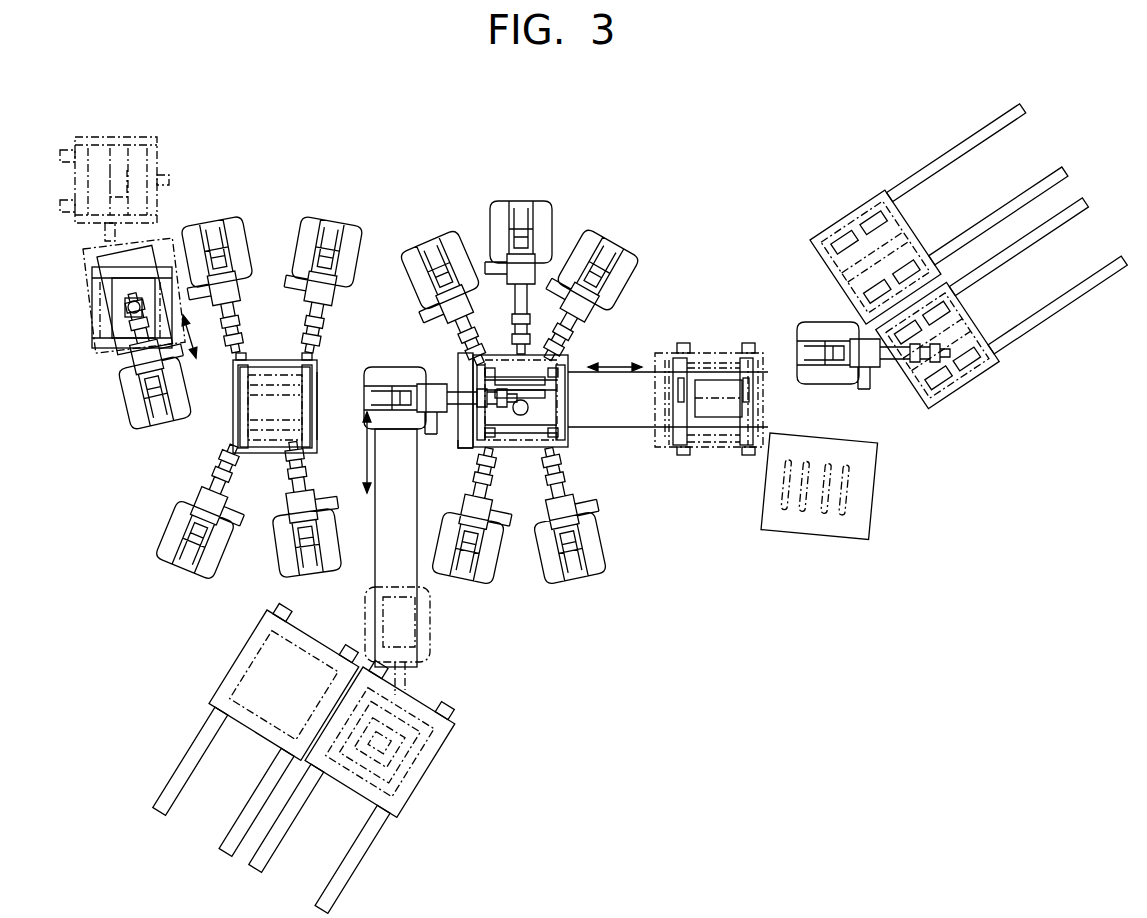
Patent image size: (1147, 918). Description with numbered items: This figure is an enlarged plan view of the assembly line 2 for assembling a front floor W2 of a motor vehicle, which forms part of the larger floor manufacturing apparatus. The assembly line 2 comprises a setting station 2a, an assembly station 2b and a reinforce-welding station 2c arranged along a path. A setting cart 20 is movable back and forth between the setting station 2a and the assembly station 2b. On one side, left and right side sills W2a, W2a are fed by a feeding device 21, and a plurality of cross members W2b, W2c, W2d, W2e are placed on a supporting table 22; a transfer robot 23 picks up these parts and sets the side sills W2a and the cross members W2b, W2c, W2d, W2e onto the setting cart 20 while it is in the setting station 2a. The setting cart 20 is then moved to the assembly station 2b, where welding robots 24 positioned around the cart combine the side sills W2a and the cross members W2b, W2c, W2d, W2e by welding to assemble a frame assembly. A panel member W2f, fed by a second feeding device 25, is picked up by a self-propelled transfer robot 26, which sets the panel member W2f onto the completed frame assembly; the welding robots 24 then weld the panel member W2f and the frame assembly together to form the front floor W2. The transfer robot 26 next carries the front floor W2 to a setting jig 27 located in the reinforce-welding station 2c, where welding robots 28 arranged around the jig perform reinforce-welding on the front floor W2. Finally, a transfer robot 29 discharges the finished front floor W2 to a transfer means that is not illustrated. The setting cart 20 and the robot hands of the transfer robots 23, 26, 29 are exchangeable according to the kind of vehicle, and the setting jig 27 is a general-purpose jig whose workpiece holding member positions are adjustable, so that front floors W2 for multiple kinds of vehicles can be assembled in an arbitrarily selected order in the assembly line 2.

The assembly line 2 is at (397, 185).
The setting station 2a is at (770, 405).
The assembly station 2b is at (466, 448).
The reinforce-welding station 2c is at (318, 372).
The setting cart 20 is at (465, 375).
The feeding device 21 is at (915, 240).
The supporting table 22 is at (865, 525).
The transfer robot 23 is at (873, 385).
The welding robots 24 is at (443, 248).
The feeding device 25 is at (235, 680).
The self-propelled transfer robot 26 is at (390, 375).
The setting jig 27 is at (270, 448).
The welding robots 28 is at (220, 228).
The transfer robot 29 is at (160, 422).
The front floor W2 is at (100, 353).
The side sills W2a is at (675, 358).
The cross member W2b is at (705, 440).
The cross member W2c is at (712, 455).
The cross member W2d is at (712, 390).
The cross member W2e is at (722, 380).
The panel member W2f is at (525, 450).